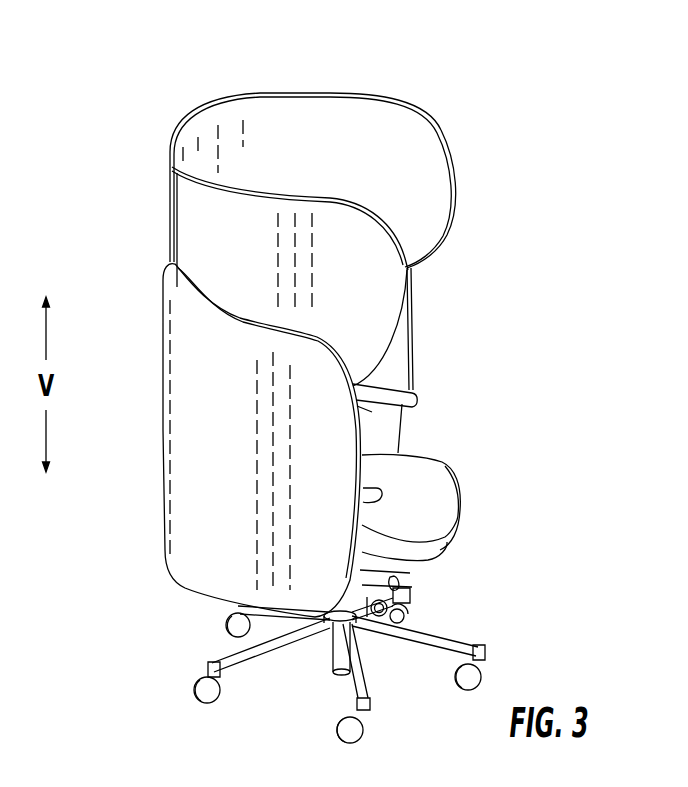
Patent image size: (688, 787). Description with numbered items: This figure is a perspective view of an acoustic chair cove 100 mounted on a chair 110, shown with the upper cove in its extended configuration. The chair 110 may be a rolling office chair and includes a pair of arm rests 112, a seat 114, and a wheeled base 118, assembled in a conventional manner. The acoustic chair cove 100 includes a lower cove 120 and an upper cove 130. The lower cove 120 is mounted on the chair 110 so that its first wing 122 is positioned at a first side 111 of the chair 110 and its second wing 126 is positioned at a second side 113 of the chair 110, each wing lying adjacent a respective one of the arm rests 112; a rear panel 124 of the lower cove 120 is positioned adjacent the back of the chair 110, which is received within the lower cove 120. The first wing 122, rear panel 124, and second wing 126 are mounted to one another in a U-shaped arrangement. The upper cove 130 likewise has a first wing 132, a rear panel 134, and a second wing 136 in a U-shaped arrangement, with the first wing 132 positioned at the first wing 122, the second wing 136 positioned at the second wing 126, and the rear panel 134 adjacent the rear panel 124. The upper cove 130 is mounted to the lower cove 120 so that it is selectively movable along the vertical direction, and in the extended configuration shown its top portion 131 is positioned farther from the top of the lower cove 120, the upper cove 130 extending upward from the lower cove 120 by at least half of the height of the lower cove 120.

The acoustic chair cove 100 is at (510, 118).
The chair 110 is at (367, 623).
The first side 111 is at (378, 478).
The arm rests 112 is at (416, 397).
The second side 113 is at (400, 362).
The seat 114 is at (445, 492).
The wheeled base 118 is at (215, 665).
The lower cove 120 is at (185, 373).
The first wing 122 is at (330, 518).
The rear panel 124 is at (167, 473).
The second wing 126 is at (412, 317).
The upper cove 130 is at (433, 233).
The top portion 131 is at (217, 102).
The first wing 132 is at (270, 290).
The rear panel 134 is at (167, 237).
The second wing 136 is at (348, 136).